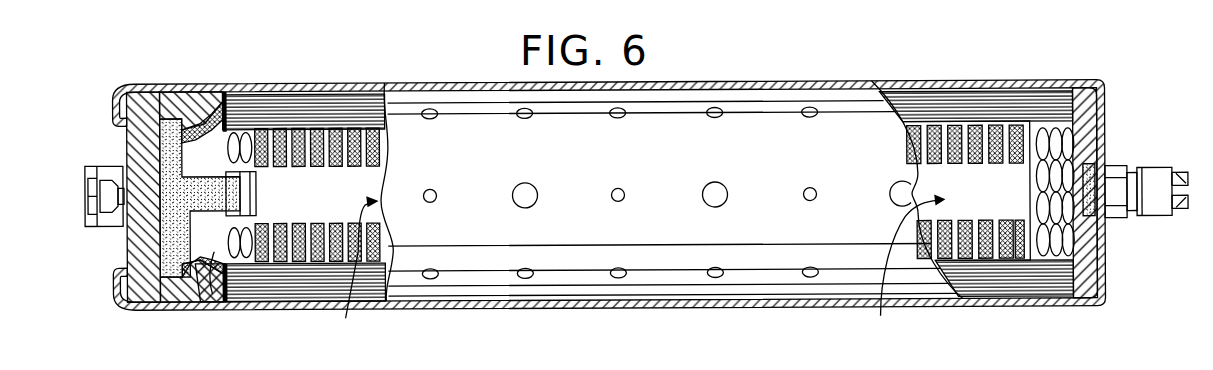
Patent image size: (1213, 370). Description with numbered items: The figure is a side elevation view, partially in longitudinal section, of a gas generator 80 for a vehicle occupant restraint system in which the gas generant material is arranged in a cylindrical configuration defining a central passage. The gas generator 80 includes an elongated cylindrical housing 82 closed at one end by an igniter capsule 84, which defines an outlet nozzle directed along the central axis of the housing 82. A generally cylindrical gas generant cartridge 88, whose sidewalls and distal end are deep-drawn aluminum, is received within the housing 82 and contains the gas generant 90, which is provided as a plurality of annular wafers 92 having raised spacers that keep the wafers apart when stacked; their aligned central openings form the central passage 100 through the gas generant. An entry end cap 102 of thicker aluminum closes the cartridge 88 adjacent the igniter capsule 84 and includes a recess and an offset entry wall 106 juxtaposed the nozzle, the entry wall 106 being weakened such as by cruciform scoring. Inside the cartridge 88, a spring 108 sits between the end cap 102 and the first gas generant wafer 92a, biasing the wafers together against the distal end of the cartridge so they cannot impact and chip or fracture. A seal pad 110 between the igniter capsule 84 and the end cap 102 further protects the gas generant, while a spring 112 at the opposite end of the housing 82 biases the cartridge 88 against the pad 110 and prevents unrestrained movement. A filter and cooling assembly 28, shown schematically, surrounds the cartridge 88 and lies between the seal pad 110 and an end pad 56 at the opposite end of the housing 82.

The filter and cooling assembly 28 is at (373, 305).
The end pad 56 is at (1078, 262).
The gas generator 80 is at (343, 64).
The elongated cylindrical housing 82 is at (937, 81).
The igniter capsule 84 is at (117, 246).
The gas generant cartridge 88 is at (1034, 262).
The gas generant 90 is at (996, 212).
The wafers 92 is at (1003, 262).
The first gas generant wafer 92a is at (320, 133).
The central passage 100 is at (632, 266).
The entry end cap 102 is at (210, 293).
The entry wall 106 is at (255, 181).
The spring 108 is at (205, 81).
The seal pad 110 is at (194, 298).
The spring 112 is at (1062, 136).